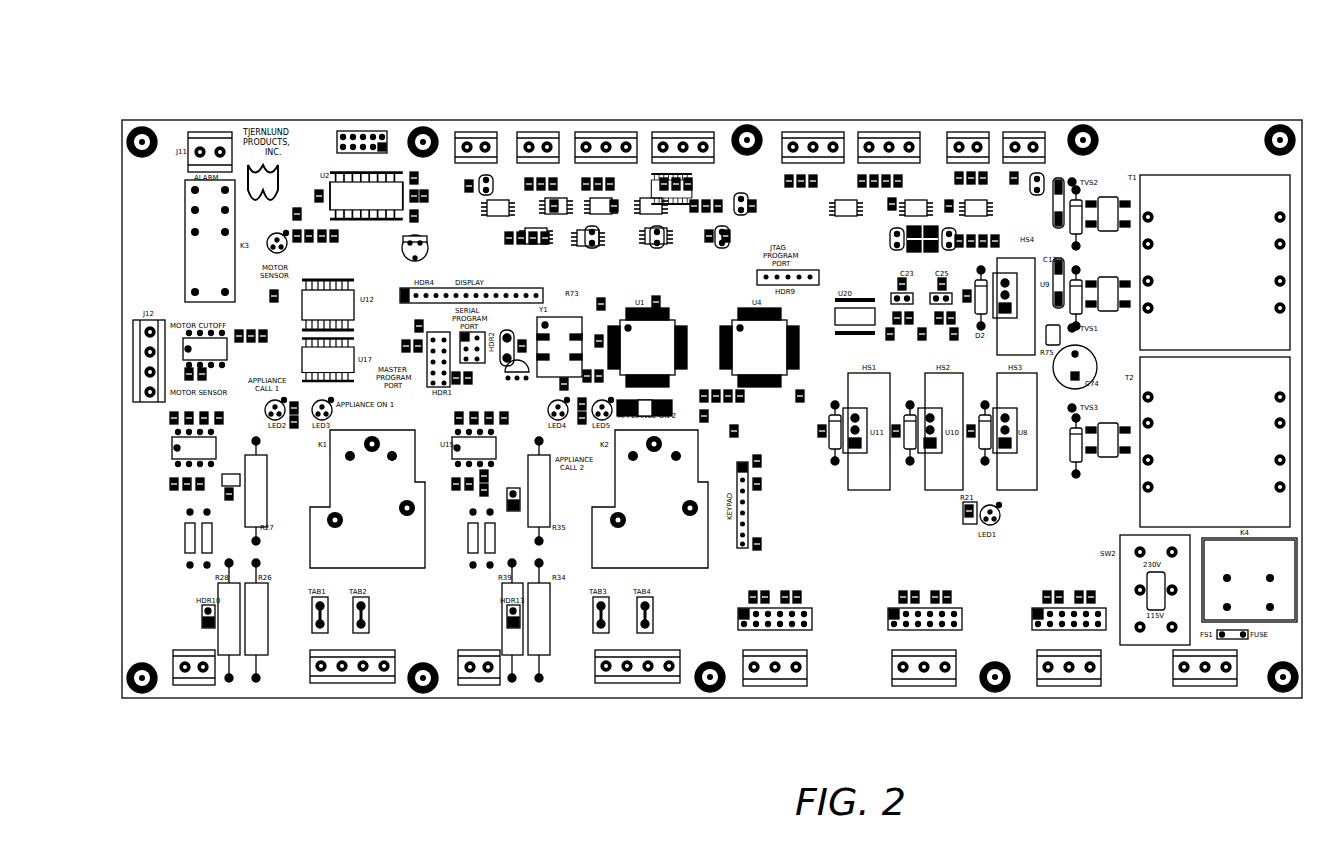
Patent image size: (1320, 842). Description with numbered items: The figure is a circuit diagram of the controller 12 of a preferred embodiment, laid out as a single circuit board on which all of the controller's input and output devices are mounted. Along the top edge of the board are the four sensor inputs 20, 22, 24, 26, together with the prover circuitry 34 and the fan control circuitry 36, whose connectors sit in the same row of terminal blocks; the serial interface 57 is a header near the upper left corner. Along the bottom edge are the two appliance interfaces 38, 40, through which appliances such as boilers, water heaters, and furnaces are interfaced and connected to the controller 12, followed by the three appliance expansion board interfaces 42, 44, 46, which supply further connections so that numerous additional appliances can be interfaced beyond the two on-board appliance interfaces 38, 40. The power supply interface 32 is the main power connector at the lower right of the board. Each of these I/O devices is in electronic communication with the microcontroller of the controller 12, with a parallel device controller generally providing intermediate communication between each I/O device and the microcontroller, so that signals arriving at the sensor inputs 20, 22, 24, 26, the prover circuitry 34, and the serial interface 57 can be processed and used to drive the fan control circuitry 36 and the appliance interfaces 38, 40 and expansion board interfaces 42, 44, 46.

The controller 12 is at (1195, 118).
The sensor input 20 is at (637, 140).
The sensor input 22 is at (718, 140).
The sensor input 24 is at (845, 134).
The sensor input 26 is at (925, 134).
The power supply interface 32 is at (1190, 699).
The prover circuitry 34 is at (495, 134).
The fan control circuitry 36 is at (552, 140).
The appliance interface 38 is at (192, 699).
The appliance interface 40 is at (478, 699).
The appliance expansion board interface 42 is at (765, 699).
The appliance expansion board interface 44 is at (906, 699).
The appliance expansion board interface 46 is at (1055, 699).
The serial interface 57 is at (362, 135).